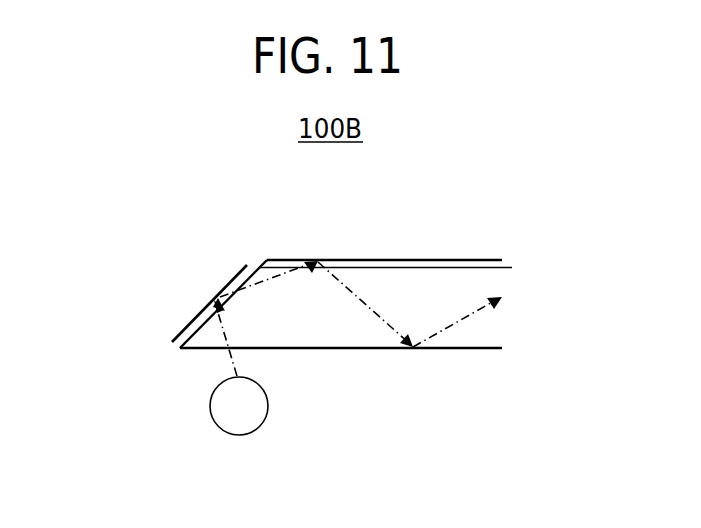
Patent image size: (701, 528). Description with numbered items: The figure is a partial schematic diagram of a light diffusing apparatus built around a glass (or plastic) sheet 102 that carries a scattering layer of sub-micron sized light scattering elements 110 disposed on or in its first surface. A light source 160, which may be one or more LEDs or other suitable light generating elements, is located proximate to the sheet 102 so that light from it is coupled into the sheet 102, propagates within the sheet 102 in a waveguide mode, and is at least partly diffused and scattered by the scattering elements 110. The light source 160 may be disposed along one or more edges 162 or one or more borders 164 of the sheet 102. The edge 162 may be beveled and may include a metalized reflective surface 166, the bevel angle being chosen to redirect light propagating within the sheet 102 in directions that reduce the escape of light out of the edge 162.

The glass sheet 102 is at (338, 348).
The light scattering elements 110 is at (445, 258).
The light source 160 is at (238, 436).
The edge 162 is at (234, 263).
The border 164 is at (203, 350).
The metalized reflective surface 166 is at (185, 325).